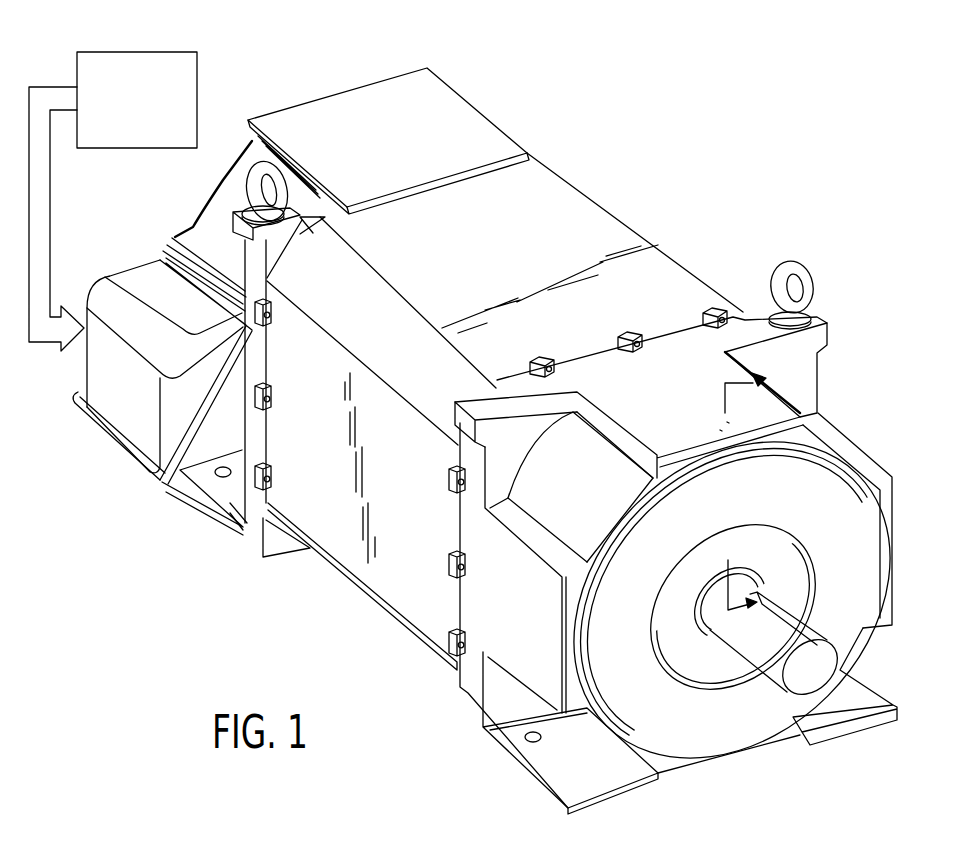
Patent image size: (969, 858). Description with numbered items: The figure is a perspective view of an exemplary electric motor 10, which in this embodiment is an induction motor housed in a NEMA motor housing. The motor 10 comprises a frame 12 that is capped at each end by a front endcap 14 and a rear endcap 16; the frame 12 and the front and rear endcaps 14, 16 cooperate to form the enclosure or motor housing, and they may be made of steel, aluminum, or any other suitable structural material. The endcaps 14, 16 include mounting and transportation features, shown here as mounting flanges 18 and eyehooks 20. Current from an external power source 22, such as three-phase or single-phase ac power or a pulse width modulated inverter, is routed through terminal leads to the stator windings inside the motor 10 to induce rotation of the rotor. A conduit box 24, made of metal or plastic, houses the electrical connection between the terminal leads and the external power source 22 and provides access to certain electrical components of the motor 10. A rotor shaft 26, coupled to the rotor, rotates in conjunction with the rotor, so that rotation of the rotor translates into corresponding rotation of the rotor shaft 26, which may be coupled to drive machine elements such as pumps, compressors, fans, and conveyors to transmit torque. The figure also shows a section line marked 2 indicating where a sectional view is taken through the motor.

The electric motor 10 is at (513, 425).
The frame 12 is at (613, 220).
The front endcap 14 is at (747, 320).
The rear endcap 16 is at (371, 97).
The mounting flange 18 is at (557, 768).
The eyehook 20 is at (250, 180).
The external power source 22 is at (138, 52).
The conduit box 24 is at (112, 404).
The rotor shaft 26 is at (820, 673).
The section line 2- 2 is at (760, 495).